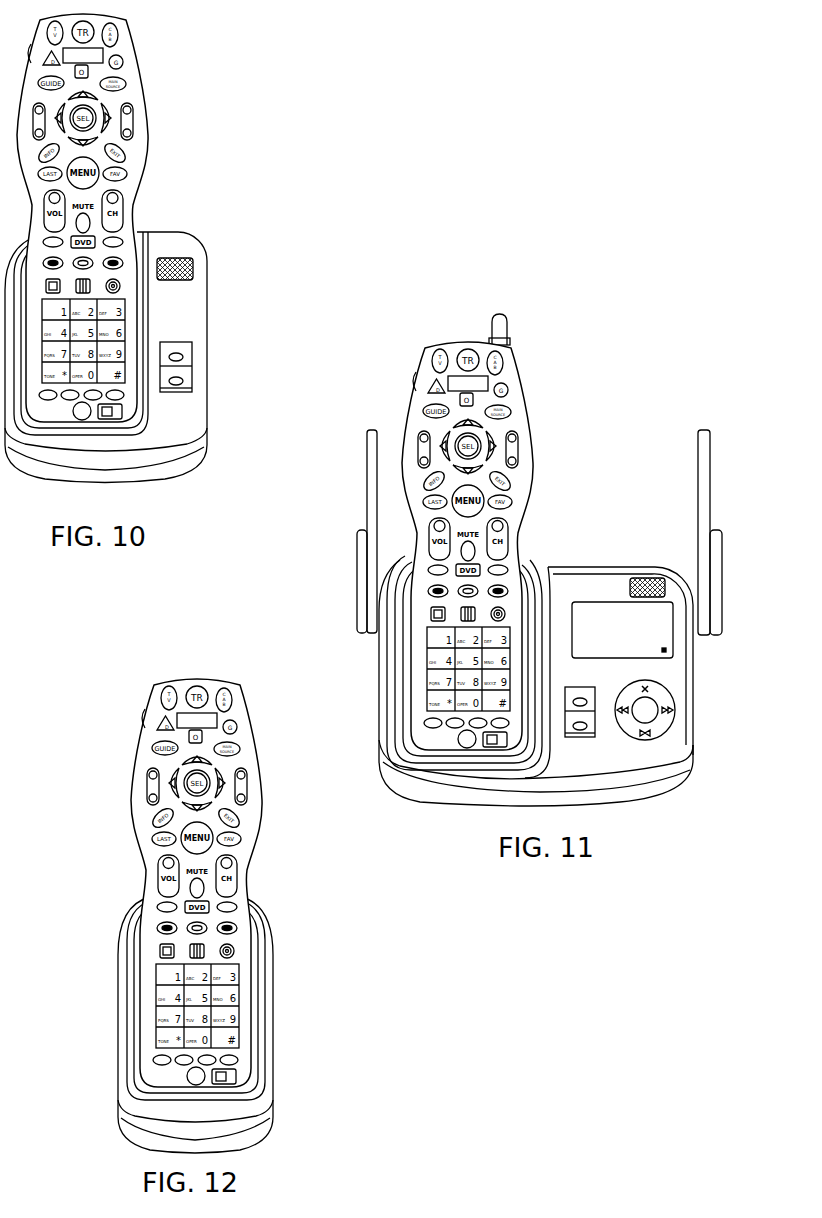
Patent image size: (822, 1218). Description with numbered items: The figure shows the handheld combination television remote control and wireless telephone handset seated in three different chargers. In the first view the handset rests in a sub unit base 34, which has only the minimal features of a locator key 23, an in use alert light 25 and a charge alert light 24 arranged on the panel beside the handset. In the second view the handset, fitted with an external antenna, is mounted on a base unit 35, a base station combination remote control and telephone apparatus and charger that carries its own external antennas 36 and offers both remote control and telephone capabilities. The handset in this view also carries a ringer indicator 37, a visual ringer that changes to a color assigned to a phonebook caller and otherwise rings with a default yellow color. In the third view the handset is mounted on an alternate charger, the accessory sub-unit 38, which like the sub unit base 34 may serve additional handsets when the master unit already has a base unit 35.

In FIG. 10, the locator key 23 is at (203, 409).
In FIG. 10, the charge alert light 24 is at (207, 377).
In FIG. 10, the in use alert light 25 is at (192, 348).
In FIG. 10, the sub unit base 34 is at (207, 287).
In FIG. 11, the base unit 35 is at (550, 567).
In FIG. 11, the antennas 36 is at (363, 481).
In FIG. 11, the ringer indicator 37 is at (507, 328).
In FIG. 12, the accessory sub-unit base 38 is at (273, 992).